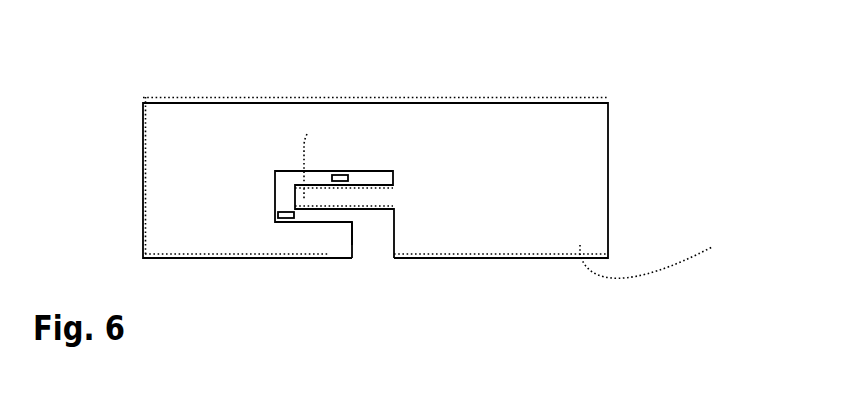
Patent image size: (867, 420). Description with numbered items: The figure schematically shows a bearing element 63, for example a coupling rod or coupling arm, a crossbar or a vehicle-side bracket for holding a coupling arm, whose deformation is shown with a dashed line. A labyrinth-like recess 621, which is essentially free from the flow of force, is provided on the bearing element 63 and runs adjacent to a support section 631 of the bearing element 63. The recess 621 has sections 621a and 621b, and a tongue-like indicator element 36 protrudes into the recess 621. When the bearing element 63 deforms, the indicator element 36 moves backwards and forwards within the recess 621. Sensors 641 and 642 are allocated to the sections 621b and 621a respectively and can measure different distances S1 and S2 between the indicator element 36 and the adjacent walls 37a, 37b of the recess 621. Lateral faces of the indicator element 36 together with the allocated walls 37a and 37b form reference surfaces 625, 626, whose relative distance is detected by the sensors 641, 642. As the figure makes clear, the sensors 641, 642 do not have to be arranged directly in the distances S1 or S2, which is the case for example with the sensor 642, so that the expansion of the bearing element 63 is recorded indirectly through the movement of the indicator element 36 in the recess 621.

The bearing element 63 is at (596, 162).
The support section 631 is at (337, 123).
The labyrinth-like recess 621 is at (319, 221).
The section of the recess 621a is at (333, 219).
The section of the recess 621b is at (364, 179).
The sensor 641 is at (342, 180).
The sensor 642 is at (278, 218).
The tongue-like indicator element 36 is at (315, 198).
The wall of the recess 37a is at (316, 221).
The wall of the recess 37b is at (325, 173).
The distance S1 is at (296, 220).
The distance S2 is at (298, 182).
The reference surface 625 is at (307, 221).
The reference surface 626 is at (340, 210).